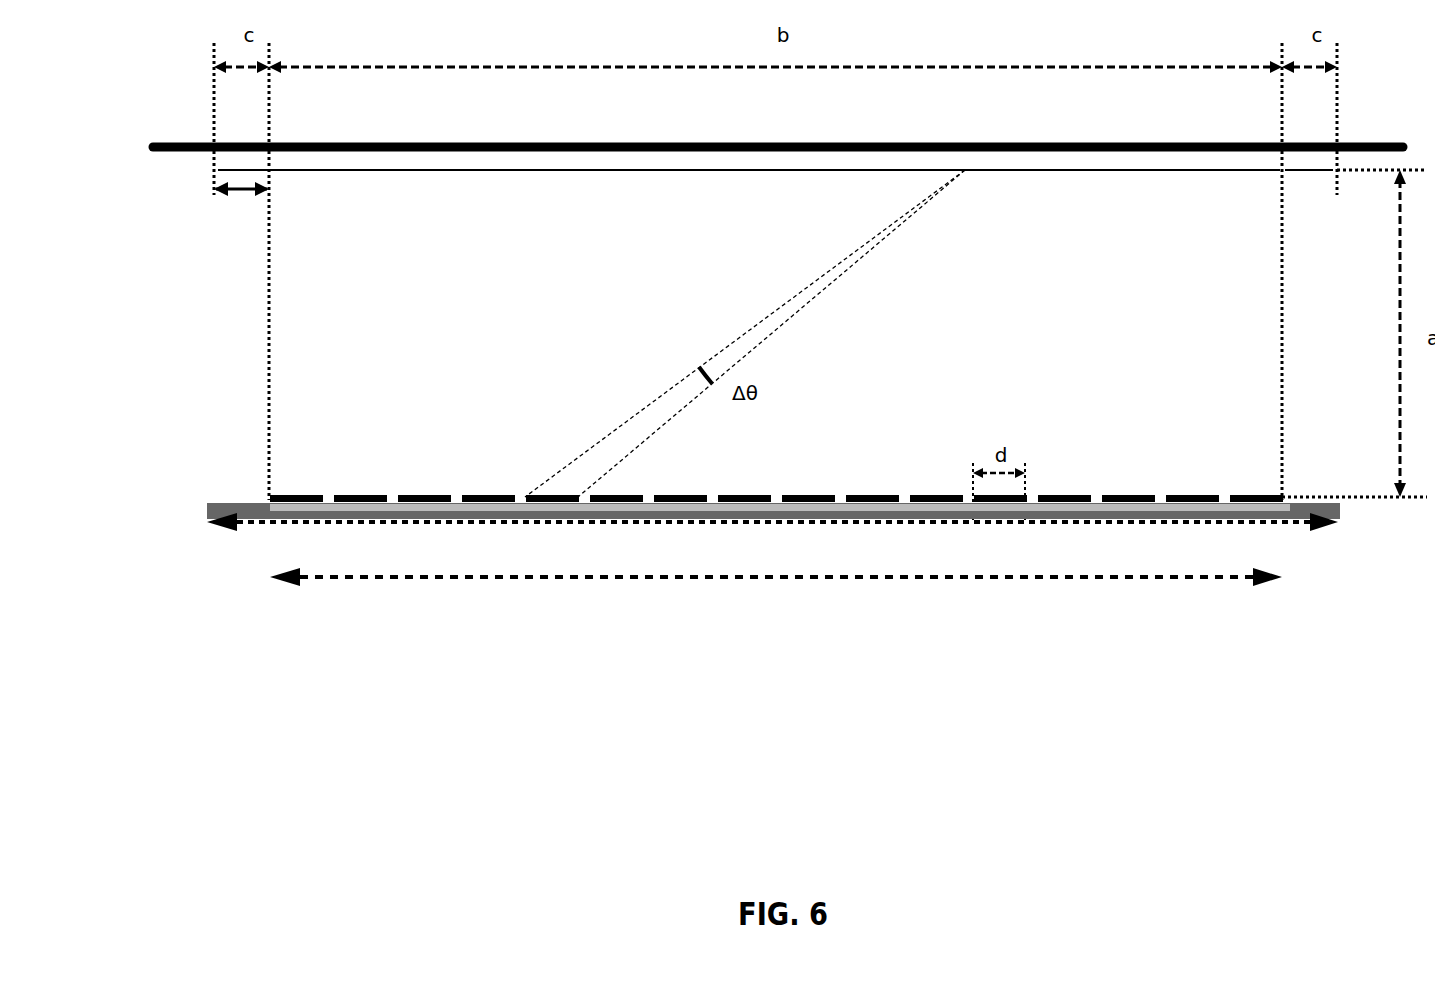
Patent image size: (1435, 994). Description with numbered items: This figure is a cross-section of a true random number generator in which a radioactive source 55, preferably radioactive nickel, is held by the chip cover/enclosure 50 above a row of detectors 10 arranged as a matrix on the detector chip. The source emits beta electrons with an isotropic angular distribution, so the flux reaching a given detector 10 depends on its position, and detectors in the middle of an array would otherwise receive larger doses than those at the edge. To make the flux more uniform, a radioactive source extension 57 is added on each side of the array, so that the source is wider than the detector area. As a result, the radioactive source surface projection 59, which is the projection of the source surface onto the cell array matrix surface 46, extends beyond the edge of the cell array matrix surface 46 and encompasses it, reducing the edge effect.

The detector 10 is at (457, 497).
The cell array matrix surface 46 is at (438, 578).
The chip cover/enclosure 50 is at (177, 143).
The radioactive source 55 is at (327, 170).
The radioactive source extension 57 is at (250, 195).
The radioactive source surface projection 59 is at (218, 525).